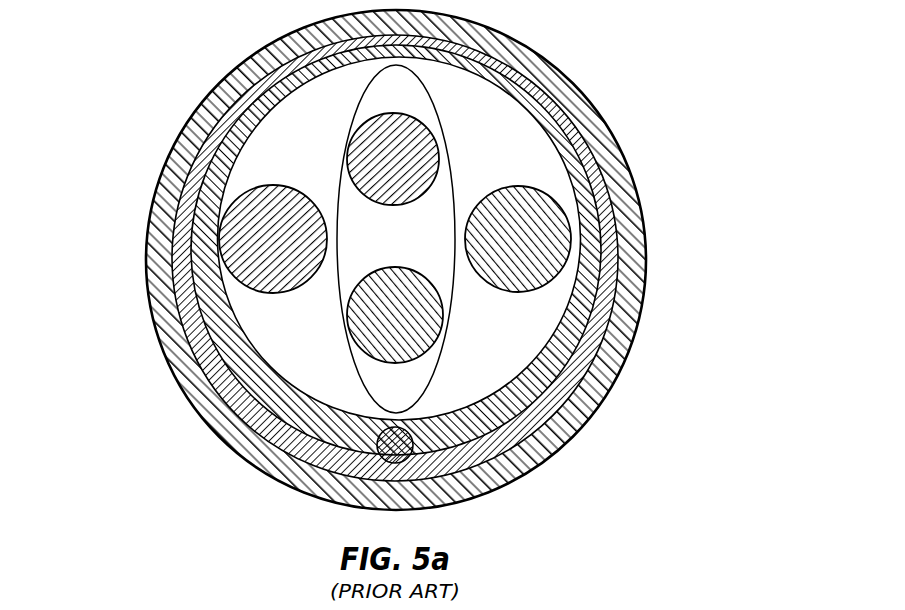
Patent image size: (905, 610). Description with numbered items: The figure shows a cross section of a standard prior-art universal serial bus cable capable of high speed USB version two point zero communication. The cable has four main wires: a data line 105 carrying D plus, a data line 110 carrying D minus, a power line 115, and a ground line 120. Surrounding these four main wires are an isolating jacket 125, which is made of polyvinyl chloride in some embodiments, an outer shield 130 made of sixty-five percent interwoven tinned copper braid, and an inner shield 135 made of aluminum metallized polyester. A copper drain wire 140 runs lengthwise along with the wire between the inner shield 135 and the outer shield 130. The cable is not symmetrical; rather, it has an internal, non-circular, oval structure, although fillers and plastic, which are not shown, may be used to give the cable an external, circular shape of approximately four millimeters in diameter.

The data line (D+) 105 is at (417, 317).
The data line (D−) 110 is at (373, 143).
The power line 115 is at (257, 215).
The ground line 120 is at (542, 200).
The isolating jacket 125 is at (515, 45).
The outer shield 130 is at (557, 122).
The inner shield 135 is at (587, 297).
The copper drain wire 140 is at (290, 470).